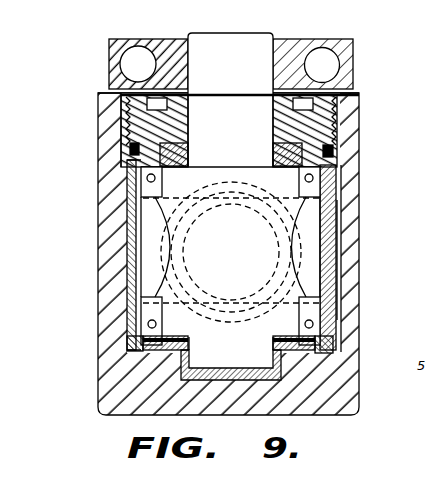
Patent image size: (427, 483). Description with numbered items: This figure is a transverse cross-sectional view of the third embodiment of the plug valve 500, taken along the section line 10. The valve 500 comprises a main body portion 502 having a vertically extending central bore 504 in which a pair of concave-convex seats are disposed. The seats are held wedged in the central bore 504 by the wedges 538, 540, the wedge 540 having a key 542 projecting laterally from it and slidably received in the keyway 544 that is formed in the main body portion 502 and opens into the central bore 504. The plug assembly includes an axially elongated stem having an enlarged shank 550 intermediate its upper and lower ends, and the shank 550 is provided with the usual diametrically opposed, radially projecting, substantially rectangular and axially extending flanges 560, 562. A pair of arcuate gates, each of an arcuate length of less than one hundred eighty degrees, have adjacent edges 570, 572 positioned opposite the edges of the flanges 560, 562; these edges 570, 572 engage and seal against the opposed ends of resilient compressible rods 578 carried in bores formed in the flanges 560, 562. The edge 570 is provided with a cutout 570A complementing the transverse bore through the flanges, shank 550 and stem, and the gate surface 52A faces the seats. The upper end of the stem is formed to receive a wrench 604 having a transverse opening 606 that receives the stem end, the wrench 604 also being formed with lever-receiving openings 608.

The section line 10- 10 is at (268, 17).
The valve 500 is at (94, 310).
The main body portion 502 is at (106, 344).
The central bore 504 is at (127, 270).
The wedge 538 is at (115, 290).
The wedge 540 is at (352, 290).
The key 542 is at (355, 224).
The keyway 544 is at (358, 244).
The shank 550 is at (147, 352).
The flange 560 is at (130, 199).
The flange 562 is at (362, 168).
The edge of arcuate gate 570 is at (140, 215).
The cutout 570A is at (138, 250).
The edge of arcuate gate 572 is at (338, 181).
The ball surface 52A is at (340, 262).
The resilient compressible rods 578 is at (155, 178).
The wrench 604 is at (326, 28).
The transverse opening 606 is at (272, 33).
The lever-receiving openings 608 is at (340, 61).